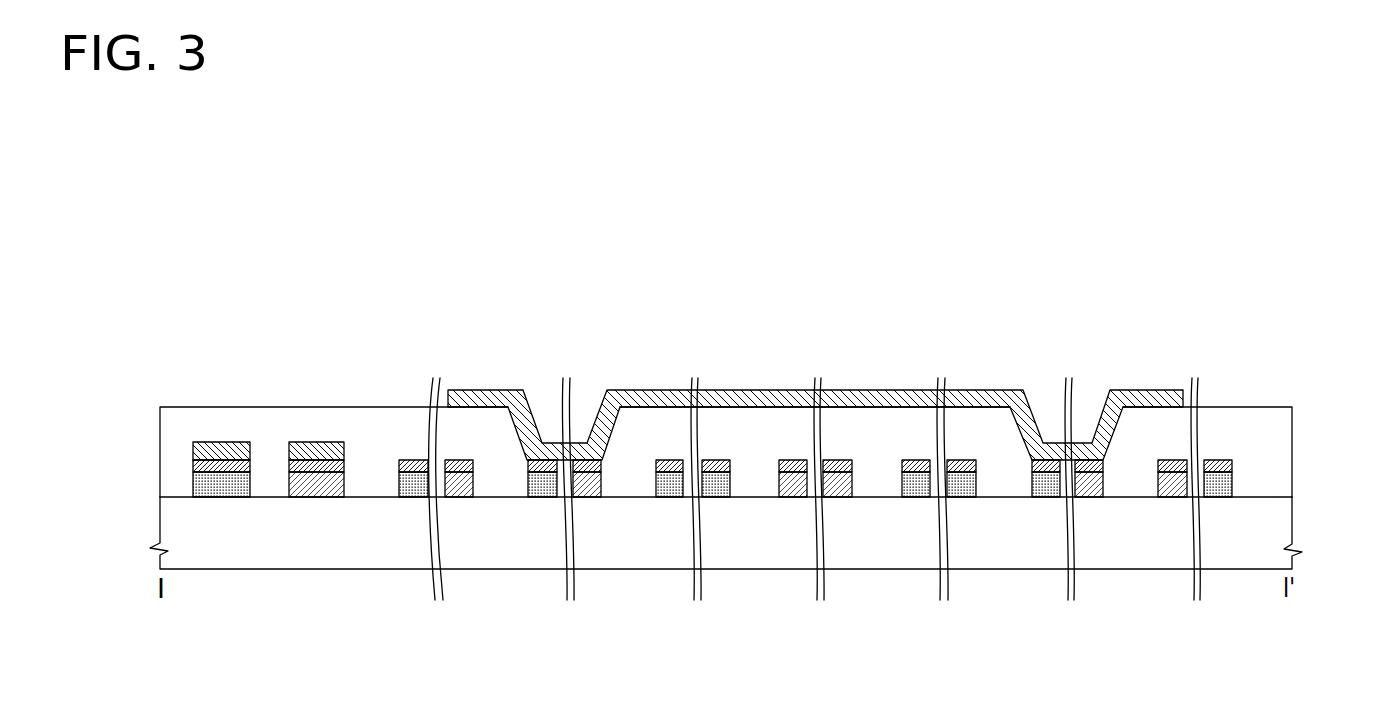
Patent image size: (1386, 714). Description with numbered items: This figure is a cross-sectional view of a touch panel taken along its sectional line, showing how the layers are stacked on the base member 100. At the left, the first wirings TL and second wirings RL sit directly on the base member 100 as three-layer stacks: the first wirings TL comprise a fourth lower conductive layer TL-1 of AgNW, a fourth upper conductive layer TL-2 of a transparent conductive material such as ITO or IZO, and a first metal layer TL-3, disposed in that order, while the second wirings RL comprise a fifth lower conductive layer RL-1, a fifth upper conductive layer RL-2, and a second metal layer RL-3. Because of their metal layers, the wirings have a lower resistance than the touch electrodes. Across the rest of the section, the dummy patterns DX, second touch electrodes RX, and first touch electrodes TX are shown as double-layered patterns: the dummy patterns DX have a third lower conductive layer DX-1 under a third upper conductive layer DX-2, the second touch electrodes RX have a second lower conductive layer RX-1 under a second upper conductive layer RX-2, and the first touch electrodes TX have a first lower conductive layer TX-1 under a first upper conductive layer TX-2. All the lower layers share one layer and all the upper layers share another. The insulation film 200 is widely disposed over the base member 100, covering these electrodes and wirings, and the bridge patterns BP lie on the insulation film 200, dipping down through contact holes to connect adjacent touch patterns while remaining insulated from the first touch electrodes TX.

The base member 100 is at (1280, 523).
The insulation film 200 is at (1280, 452).
The bridge pattern BP is at (753, 400).
The first wiring TL is at (141, 466).
The fourth lower conductive layer TL-1 is at (197, 481).
The fourth upper conductive layer TL-2 is at (193, 465).
The first metal layer TL-3 is at (193, 450).
The second wiring RL is at (318, 395).
The fifth lower conductive layer RL-1 is at (287, 417).
The fifth upper conductive layer RL-2 is at (316, 467).
The second metal layer RL-3 is at (333, 452).
The dummy pattern DX is at (410, 575).
The third lower conductive layer DX-1 is at (413, 490).
The third upper conductive layer DX-2 is at (399, 464).
The second touch electrode RX is at (842, 575).
The second lower conductive layer RX-1 is at (592, 492).
The second upper conductive layer RX-2 is at (598, 466).
The first touch electrode TX is at (853, 575).
The first lower conductive layer TX-1 is at (843, 492).
The first upper conductive layer TX-2 is at (848, 466).